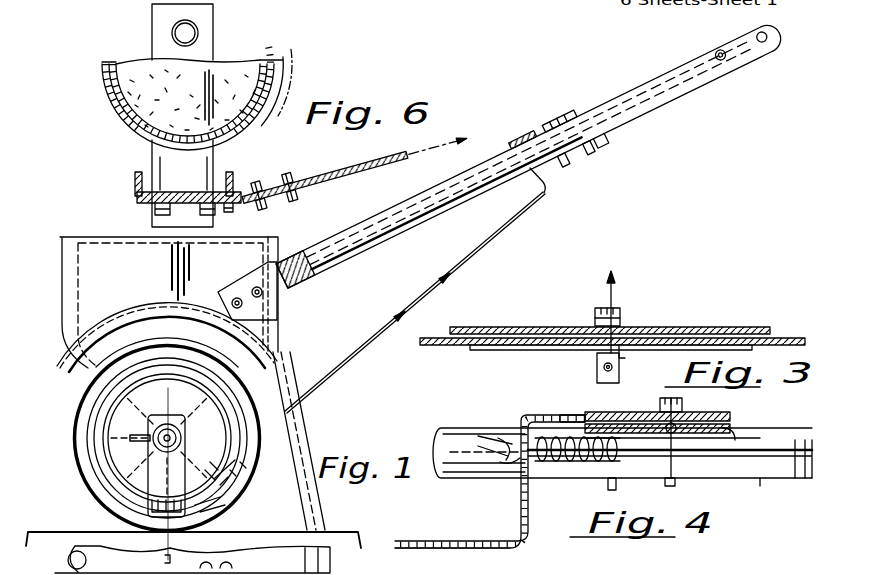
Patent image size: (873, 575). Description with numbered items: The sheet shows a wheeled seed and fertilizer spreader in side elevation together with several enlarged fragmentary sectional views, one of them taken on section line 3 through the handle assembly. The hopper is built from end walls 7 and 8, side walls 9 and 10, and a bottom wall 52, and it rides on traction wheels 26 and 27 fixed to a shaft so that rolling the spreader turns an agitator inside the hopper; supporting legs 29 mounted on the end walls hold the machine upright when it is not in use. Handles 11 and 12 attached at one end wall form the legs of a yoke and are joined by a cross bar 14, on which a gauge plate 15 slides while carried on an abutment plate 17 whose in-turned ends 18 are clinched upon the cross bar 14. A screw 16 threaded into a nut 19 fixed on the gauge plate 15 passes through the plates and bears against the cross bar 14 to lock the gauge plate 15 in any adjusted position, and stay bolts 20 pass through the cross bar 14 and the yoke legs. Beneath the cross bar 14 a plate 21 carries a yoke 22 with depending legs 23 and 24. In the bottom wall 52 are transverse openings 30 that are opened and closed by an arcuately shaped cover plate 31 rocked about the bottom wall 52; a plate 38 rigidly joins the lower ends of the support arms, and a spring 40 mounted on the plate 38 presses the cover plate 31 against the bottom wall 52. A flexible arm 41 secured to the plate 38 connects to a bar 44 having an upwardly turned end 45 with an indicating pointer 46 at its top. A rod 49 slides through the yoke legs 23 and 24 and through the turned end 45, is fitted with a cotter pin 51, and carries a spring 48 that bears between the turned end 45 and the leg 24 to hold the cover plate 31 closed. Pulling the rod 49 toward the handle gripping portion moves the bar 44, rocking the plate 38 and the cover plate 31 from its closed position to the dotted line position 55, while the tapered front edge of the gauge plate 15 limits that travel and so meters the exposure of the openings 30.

In FIG. 1, the section line 3— 3 is at (192, 399).
In FIG. 1, the end wall 7 is at (240, 250).
In FIG. 1, the end wall 8 is at (176, 548).
In FIG. 1, the side wall 9 is at (284, 262).
In FIG. 1, the side wall 10 is at (62, 300).
In FIG. 4, the handle 11 is at (452, 561).
In FIG. 1, the handle 12 is at (381, 258).
In FIG. 3, the cross bar 14 is at (783, 338).
In FIG. 4, the cross bar 14 is at (742, 430).
In FIG. 3, the gauge plate 15 is at (702, 330).
In FIG. 4, the gauge plate 15 is at (632, 414).
In FIG. 1, the screw 16 is at (560, 100).
In FIG. 3, the screw 16 is at (621, 312).
In FIG. 4, the screw 16 is at (639, 401).
In FIG. 3, the abutment plate 17 is at (556, 350).
In FIG. 4, the abutment plate 17 is at (722, 425).
In FIG. 3, the in-turned ends 18 is at (508, 351).
In FIG. 4, the in-turned ends 18 is at (616, 414).
In FIG. 3, the nut 19 is at (622, 326).
In FIG. 4, the nut 19 is at (680, 414).
In FIG. 4, the stay bolts 20 is at (668, 482).
In FIG. 3, the plate 21 is at (626, 352).
In FIG. 4, the plate 21 is at (722, 440).
In FIG. 4, the yoke 22 is at (776, 440).
In FIG. 1, the depending leg 23 is at (655, 108).
In FIG. 3, the depending leg 23 is at (597, 369).
In FIG. 4, the depending leg 23 is at (762, 480).
In FIG. 1, the depending leg 24 is at (562, 165).
In FIG. 4, the depending leg 24 is at (612, 479).
In FIG. 1, the traction wheel 26 is at (68, 556).
In FIG. 1, the traction wheel 27 is at (98, 478).
In FIG. 1, the supporting legs 29 is at (304, 448).
In FIG. 6, the openings 30 is at (255, 134).
In FIG. 6, the arcuately shaped plate 31 is at (130, 140).
In FIG. 1, the arcuately shaped plate 31 is at (230, 512).
In FIG. 6, the plate 38 is at (245, 213).
In FIG. 6, the spring 40 is at (150, 181).
In FIG. 6, the flexible arm 41 is at (252, 188).
In FIG. 1, the flexible arm 41 is at (242, 498).
In FIG. 6, the bar 44 is at (367, 178).
In FIG. 1, the bar 44 is at (346, 376).
In FIG. 1, the upwardly turned end 45 is at (533, 184).
In FIG. 4, the upwardly turned end 45 is at (530, 519).
In FIG. 1, the indicating pointer 46 is at (523, 136).
In FIG. 4, the indicating pointer 46 is at (574, 414).
In FIG. 4, the spring 48 is at (583, 466).
In FIG. 4, the rod 49 is at (796, 479).
In FIG. 4, the cotter pin 51 is at (505, 478).
In FIG. 6, the bottom wall 52 is at (108, 95).
In FIG. 1, the bottom wall 52 is at (148, 492).
In FIG. 6, the dotted line position 55 is at (293, 74).